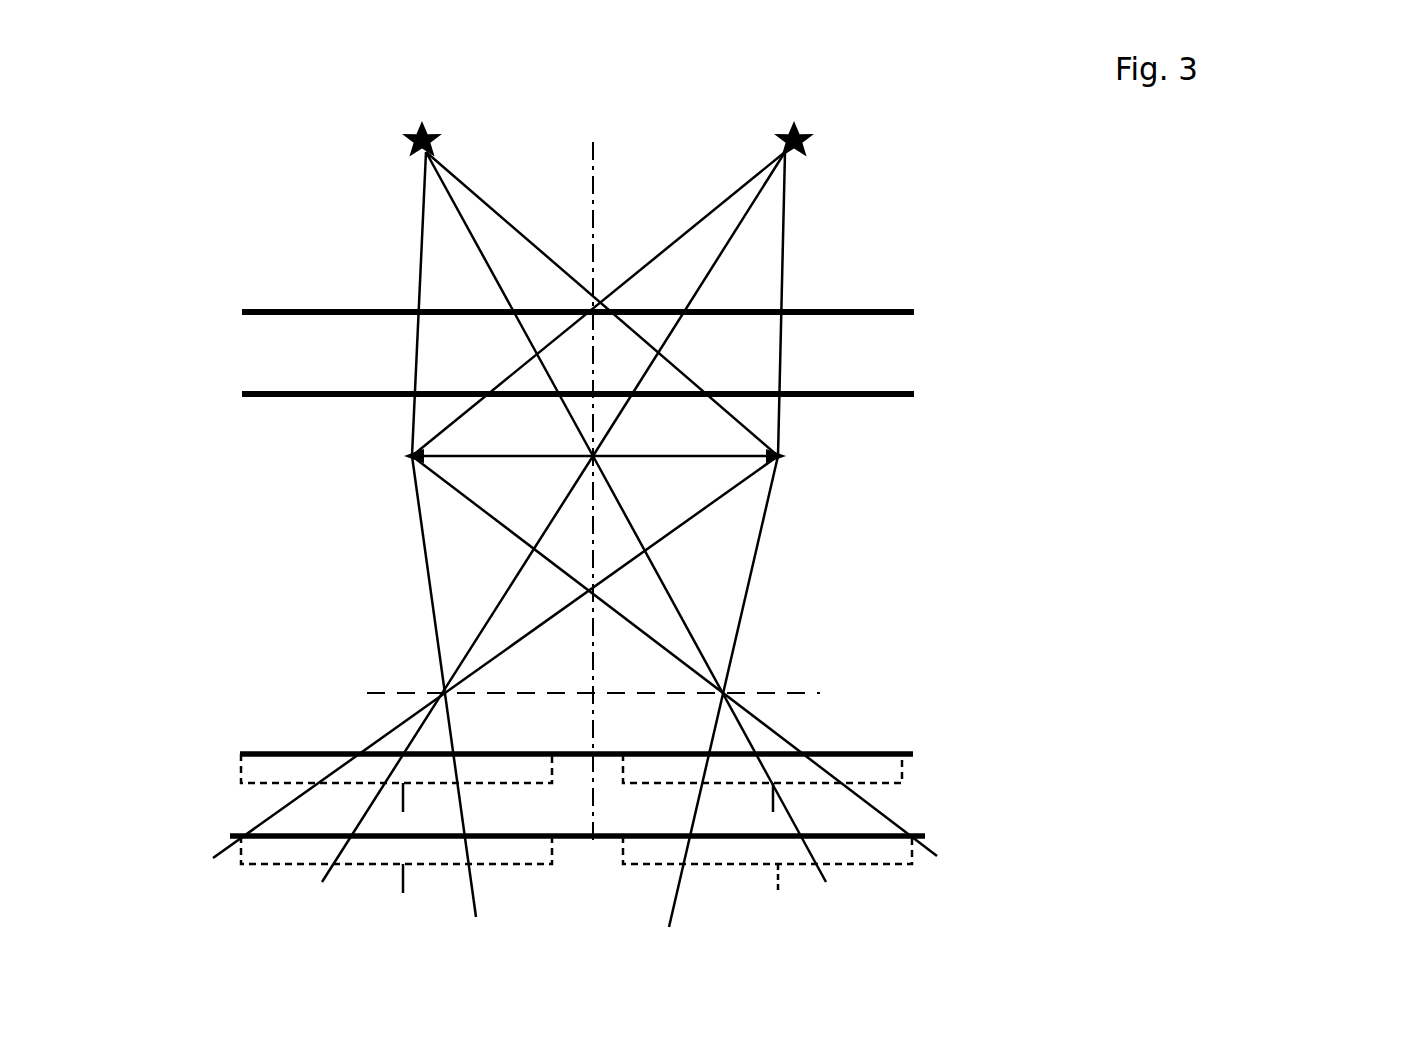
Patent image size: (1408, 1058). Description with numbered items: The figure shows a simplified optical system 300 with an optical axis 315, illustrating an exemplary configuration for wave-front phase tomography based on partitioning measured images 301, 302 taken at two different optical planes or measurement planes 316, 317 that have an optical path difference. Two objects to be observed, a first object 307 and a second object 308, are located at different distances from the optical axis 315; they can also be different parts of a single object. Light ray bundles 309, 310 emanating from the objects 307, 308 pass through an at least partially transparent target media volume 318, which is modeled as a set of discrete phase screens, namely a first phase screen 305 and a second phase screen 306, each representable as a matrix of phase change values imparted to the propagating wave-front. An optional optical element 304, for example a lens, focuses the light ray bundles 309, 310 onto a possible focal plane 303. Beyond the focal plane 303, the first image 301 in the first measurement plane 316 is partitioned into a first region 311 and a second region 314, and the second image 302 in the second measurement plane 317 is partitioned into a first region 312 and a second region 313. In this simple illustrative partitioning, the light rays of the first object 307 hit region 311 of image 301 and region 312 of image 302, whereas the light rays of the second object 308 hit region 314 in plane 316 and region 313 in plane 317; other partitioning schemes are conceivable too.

The optical system 300 is at (196, 46).
The first image 301 is at (238, 755).
The second image 302 is at (225, 830).
The focal plane 303 is at (355, 693).
The optical element 304 is at (390, 475).
The first phase screen 305 is at (250, 396).
The second phase screen 306 is at (250, 313).
The first object 307 is at (390, 151).
The second object 308 is at (820, 150).
The light ray bundle emanating from first object 309 is at (437, 220).
The light ray bundle emanating from second object 310 is at (750, 240).
The first region of first image 311 is at (903, 778).
The first region of second image 312 is at (903, 870).
The second region of second image 313 is at (250, 868).
The second region of first image 314 is at (238, 788).
The optical axis 315 is at (598, 172).
The first measurement plane 316 is at (795, 748).
The second measurement plane 317 is at (814, 843).
The target media volume 318 is at (738, 337).